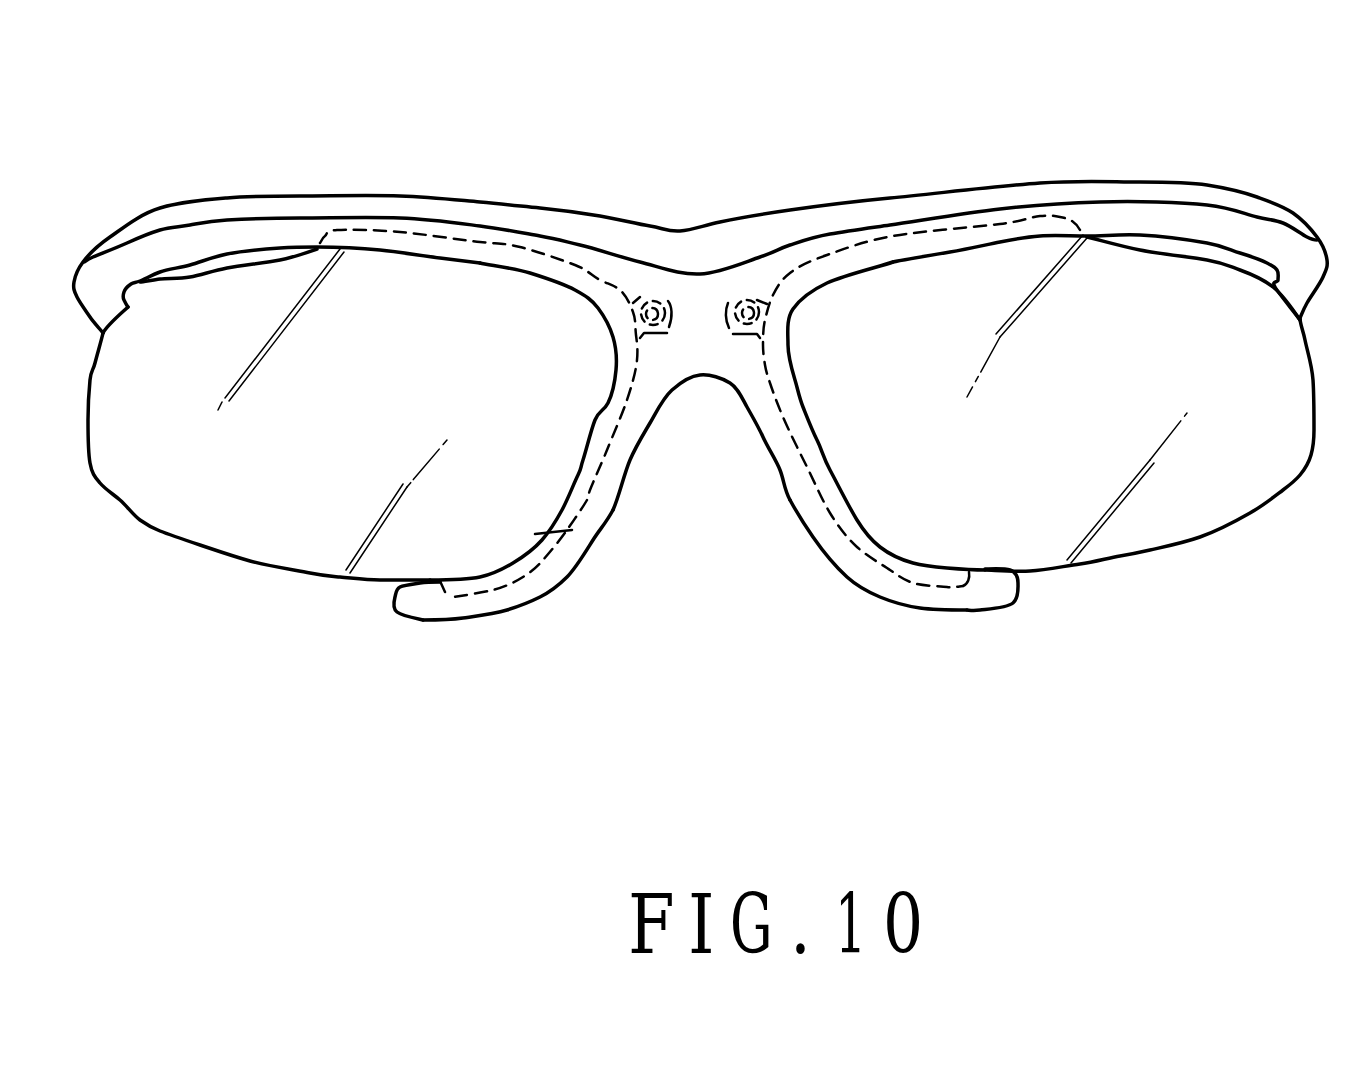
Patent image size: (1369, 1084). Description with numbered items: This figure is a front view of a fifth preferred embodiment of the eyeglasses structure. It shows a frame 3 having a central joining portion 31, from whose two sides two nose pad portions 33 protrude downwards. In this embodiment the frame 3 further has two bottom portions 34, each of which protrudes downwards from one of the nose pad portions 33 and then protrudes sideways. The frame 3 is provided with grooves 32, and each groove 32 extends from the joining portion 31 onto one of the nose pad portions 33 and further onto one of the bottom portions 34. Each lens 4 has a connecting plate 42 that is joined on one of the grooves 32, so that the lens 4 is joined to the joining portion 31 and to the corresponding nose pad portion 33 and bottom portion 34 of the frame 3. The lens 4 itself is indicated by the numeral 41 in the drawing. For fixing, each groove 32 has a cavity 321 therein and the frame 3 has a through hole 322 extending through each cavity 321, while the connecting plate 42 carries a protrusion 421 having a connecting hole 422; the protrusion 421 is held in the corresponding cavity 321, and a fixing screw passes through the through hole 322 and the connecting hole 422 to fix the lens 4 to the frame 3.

The frame 3 is at (1257, 237).
The joining portion 31 is at (680, 367).
The groove 32 is at (537, 530).
The nose pad portion 33 is at (813, 510).
The bottom portion 34 is at (980, 597).
The cavity 321 is at (728, 300).
The through hole 322 is at (760, 294).
The lens 4 is at (683, 387).
The lens 41 is at (267, 510).
The connecting plate 42 is at (420, 240).
The protrusion 421 is at (637, 298).
The connecting hole 422 is at (670, 302).